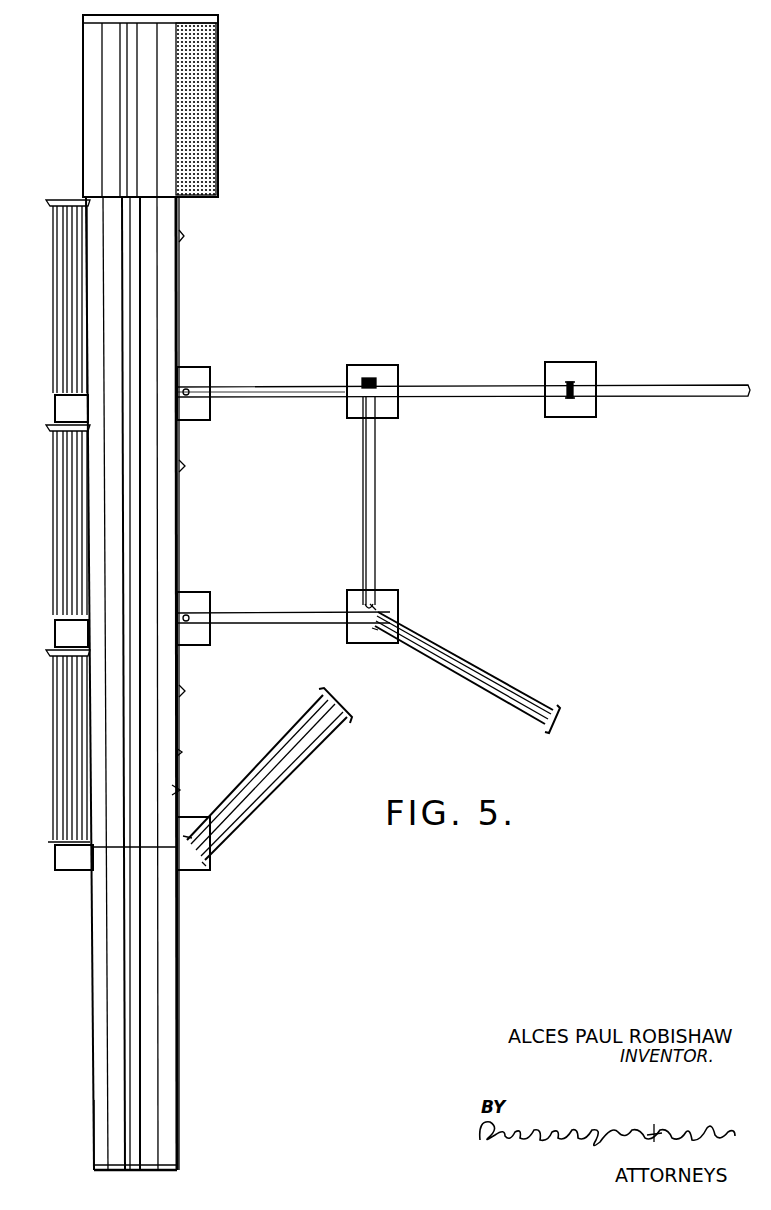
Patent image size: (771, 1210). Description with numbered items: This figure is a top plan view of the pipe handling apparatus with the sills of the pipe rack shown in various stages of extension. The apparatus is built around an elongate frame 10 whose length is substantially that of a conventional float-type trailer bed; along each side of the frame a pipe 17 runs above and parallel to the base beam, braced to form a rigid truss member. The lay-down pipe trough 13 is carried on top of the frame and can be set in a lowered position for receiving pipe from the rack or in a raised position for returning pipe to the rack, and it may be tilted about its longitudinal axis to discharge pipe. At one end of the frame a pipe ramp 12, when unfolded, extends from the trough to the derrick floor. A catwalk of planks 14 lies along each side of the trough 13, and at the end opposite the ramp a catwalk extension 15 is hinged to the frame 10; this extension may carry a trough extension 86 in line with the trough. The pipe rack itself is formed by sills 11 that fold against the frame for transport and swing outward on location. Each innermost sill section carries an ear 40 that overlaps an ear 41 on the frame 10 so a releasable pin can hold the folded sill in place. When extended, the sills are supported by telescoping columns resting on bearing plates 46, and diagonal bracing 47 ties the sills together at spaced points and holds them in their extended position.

The elongate frame section 10 is at (180, 344).
The sills 11 is at (509, 383).
The pipe ramp 12 is at (82, 89).
The lay-down pipe trough 13 is at (132, 536).
The catwalk of planks 14 is at (176, 793).
The catwalk extension 15 is at (180, 1008).
The pipe 17 is at (182, 754).
The ear 40 is at (346, 608).
The ear 41 is at (212, 451).
The bearing plates 46 is at (573, 410).
The diagonal bracing 47 is at (388, 468).
The trough extension 86 is at (130, 1143).